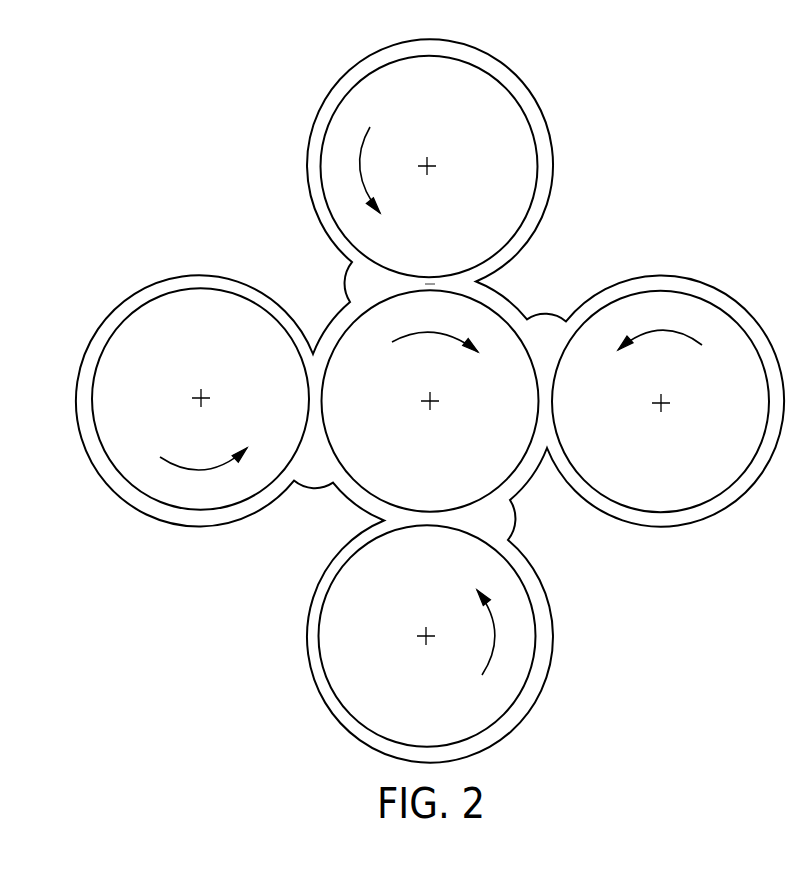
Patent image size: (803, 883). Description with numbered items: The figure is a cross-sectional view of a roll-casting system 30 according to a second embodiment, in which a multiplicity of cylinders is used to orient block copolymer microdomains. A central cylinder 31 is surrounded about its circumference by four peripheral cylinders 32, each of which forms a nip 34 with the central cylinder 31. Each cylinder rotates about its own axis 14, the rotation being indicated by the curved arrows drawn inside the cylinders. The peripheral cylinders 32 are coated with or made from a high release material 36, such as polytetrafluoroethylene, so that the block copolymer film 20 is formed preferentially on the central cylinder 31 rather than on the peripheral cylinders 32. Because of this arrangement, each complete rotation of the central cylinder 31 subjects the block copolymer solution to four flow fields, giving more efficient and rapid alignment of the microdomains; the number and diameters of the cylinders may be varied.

The system 30 is at (96, 218).
The block copolymer film 20 is at (508, 518).
The high release material 36 is at (540, 627).
The central cylinder 31 is at (463, 470).
The peripheral cylinders 32 is at (474, 227).
The axis 14 is at (370, 127).
The nip 34 is at (430, 282).